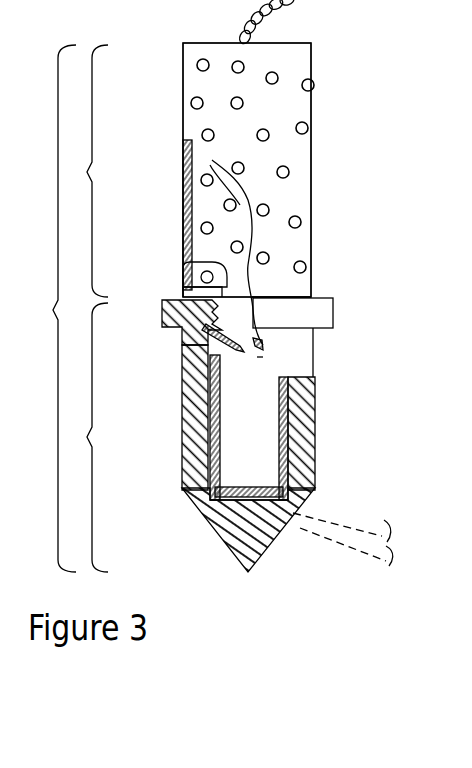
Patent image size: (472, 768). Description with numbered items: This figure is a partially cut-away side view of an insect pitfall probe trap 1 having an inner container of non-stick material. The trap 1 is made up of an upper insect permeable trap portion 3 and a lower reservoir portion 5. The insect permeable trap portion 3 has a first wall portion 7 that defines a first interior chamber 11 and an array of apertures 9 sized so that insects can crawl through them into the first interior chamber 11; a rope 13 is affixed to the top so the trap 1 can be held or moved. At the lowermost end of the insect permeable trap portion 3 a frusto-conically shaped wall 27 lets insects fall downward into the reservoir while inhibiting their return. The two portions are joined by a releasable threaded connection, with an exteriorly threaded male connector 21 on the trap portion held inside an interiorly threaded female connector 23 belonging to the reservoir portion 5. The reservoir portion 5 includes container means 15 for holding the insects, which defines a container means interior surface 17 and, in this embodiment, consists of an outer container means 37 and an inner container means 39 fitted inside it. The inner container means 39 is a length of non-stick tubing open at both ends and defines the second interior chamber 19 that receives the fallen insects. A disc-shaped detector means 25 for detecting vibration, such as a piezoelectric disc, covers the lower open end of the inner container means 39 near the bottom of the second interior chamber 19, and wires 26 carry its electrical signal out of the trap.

The insect pitfall probe trap 1 is at (58, 308).
The insect permeable trap portion 3 is at (189, 170).
The reservoir portion 5 is at (89, 437).
The first wall portion 7 is at (283, 115).
The aperture 9 is at (287, 166).
The first interior chamber 11 is at (232, 268).
The rope 13 is at (292, 1).
The container means 15 is at (315, 470).
The container means interior surface 17 is at (215, 432).
The second interior chamber 19 is at (283, 376).
The exteriorly threaded male connector 21 is at (188, 270).
The interiorly threaded female connector 23 is at (166, 320).
The detector means 25 is at (238, 485).
The wires 26 is at (332, 540).
The frusto-conically shaped wall 27 is at (216, 344).
The outer container means 37 is at (313, 428).
The inner container means 39 is at (286, 380).